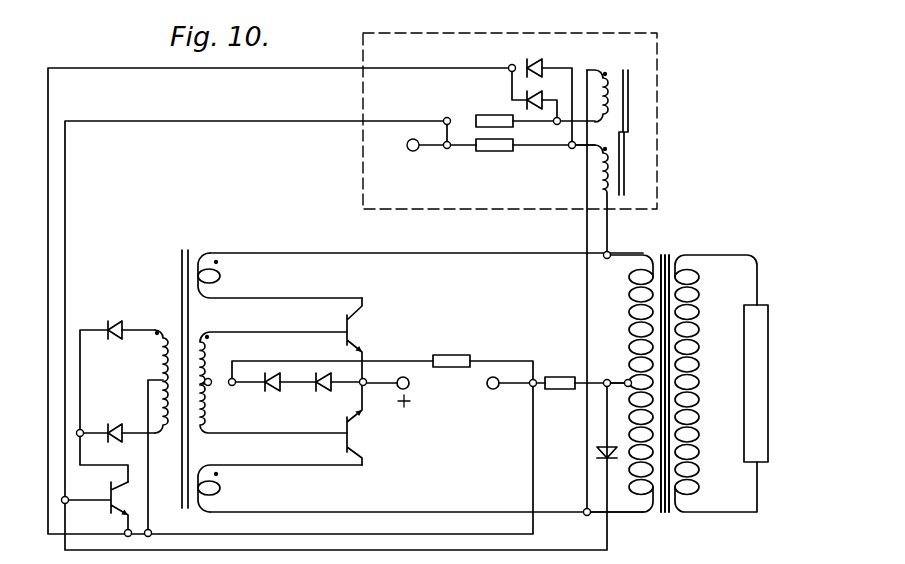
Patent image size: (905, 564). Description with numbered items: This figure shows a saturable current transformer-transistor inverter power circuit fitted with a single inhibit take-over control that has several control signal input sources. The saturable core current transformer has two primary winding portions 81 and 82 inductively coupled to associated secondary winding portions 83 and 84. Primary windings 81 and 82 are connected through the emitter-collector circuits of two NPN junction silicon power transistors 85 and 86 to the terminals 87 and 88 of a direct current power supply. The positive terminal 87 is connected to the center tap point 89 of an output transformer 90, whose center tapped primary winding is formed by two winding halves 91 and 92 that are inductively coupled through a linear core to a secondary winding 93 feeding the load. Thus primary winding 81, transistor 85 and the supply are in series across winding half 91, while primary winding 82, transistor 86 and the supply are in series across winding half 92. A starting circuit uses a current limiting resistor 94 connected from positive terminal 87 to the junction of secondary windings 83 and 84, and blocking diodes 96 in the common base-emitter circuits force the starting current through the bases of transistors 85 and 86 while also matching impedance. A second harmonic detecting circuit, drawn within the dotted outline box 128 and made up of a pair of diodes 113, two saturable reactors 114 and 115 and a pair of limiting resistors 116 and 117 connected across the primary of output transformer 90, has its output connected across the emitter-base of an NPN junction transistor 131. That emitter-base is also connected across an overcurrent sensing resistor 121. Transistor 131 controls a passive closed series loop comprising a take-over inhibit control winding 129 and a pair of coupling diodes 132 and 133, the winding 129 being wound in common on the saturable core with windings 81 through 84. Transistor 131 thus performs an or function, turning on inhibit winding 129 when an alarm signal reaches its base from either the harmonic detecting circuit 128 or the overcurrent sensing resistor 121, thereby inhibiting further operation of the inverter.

The primary winding portion 81 is at (222, 273).
The primary winding portion 82 is at (222, 487).
The secondary winding portion 83 is at (213, 357).
The secondary winding portion 84 is at (210, 405).
The NPN junction silicon power transistor 85 is at (345, 323).
The NPN junction silicon power transistor 86 is at (356, 433).
The positive terminal 87 is at (409, 383).
The terminal 88 is at (487, 381).
The center tap point 89 is at (626, 380).
The output transformer 90 is at (681, 250).
The primary winding half 91 is at (629, 306).
The primary winding half 92 is at (620, 529).
The secondary winding 93 is at (700, 325).
The current limiting resistor 94 is at (452, 356).
The blocking diode 96 is at (317, 388).
The diodes 113 is at (536, 72).
The saturable reactor 114 is at (610, 72).
The saturable reactor 115 is at (594, 188).
The limiting resistor 116 is at (490, 118).
The limiting resistor 117 is at (498, 146).
The overcurrent sensing resistor 121 is at (566, 388).
The second harmonic detecting circuit 128 is at (360, 167).
The take-over inhibit control winding 129 is at (157, 362).
The NPN junction transistor 131 is at (109, 489).
The coupling diode 132 is at (118, 428).
The coupling diode 133 is at (116, 322).